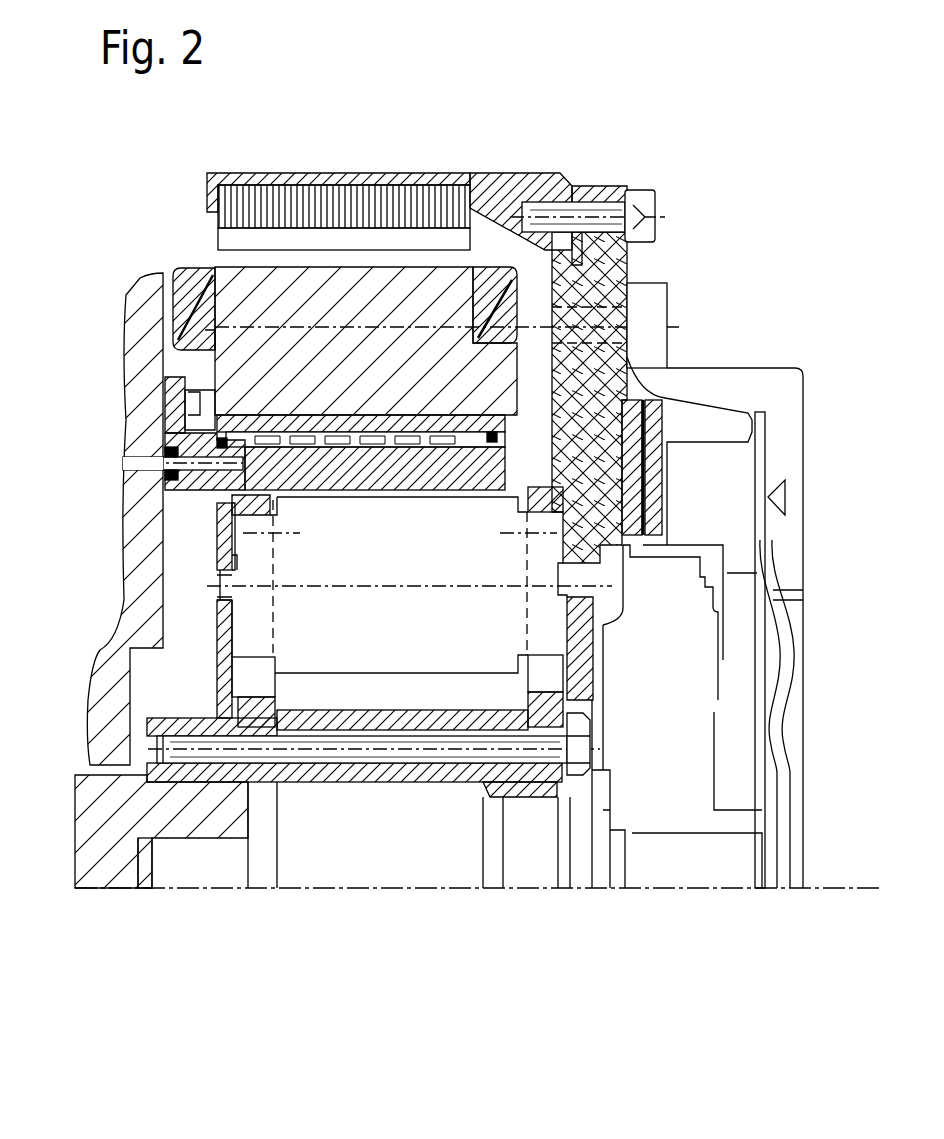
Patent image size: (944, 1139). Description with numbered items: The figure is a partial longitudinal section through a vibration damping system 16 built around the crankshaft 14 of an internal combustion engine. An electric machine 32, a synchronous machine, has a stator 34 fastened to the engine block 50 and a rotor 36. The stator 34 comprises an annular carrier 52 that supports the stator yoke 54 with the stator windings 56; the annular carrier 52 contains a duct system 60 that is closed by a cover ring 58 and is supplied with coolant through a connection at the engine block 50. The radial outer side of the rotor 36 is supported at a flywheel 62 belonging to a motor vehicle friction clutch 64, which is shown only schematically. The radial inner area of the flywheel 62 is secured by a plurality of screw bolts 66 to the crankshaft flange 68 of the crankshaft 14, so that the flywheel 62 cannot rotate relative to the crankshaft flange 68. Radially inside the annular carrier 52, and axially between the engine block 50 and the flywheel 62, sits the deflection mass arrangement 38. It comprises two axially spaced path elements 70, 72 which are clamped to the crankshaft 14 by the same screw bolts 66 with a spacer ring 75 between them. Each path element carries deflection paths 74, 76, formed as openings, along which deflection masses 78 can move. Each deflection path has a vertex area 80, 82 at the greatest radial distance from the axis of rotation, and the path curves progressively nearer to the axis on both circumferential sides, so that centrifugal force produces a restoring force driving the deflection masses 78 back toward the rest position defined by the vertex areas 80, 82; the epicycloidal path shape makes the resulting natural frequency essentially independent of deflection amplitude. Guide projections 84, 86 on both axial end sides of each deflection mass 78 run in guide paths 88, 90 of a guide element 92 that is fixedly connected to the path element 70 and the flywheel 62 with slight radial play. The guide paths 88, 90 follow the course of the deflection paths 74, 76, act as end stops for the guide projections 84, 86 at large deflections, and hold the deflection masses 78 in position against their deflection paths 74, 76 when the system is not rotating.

The crankshaft 14 is at (92, 880).
The vibration damping system 16 is at (537, 130).
The electric machine 32 is at (520, 392).
The stator 34 is at (210, 258).
The rotor 36 is at (405, 172).
The deflection mass arrangement 38 is at (337, 693).
The engine block 50 is at (148, 336).
The annular carrier 52 is at (168, 486).
The stator yoke 54 is at (575, 188).
The stator windings 56 is at (660, 206).
The cover ring 58 is at (672, 330).
The duct system 60 is at (648, 366).
The flywheel 62 is at (690, 373).
The friction clutch 64 is at (782, 497).
The screw bolts 66 is at (485, 750).
The crankshaft flange 68 is at (205, 830).
The path element 70 is at (262, 820).
The path element 72 is at (558, 773).
The deflection path 74 is at (250, 670).
The spacer ring 75 is at (388, 775).
The deflection path 76 is at (548, 677).
The deflection mass 78 is at (233, 557).
The vertex area 80 is at (293, 540).
The vertex area 82 is at (625, 490).
The guide projection 84 is at (222, 580).
The guide projection 86 is at (590, 573).
The guide path 88 is at (222, 607).
The guide path 90 is at (603, 618).
The guide element 92 is at (240, 678).